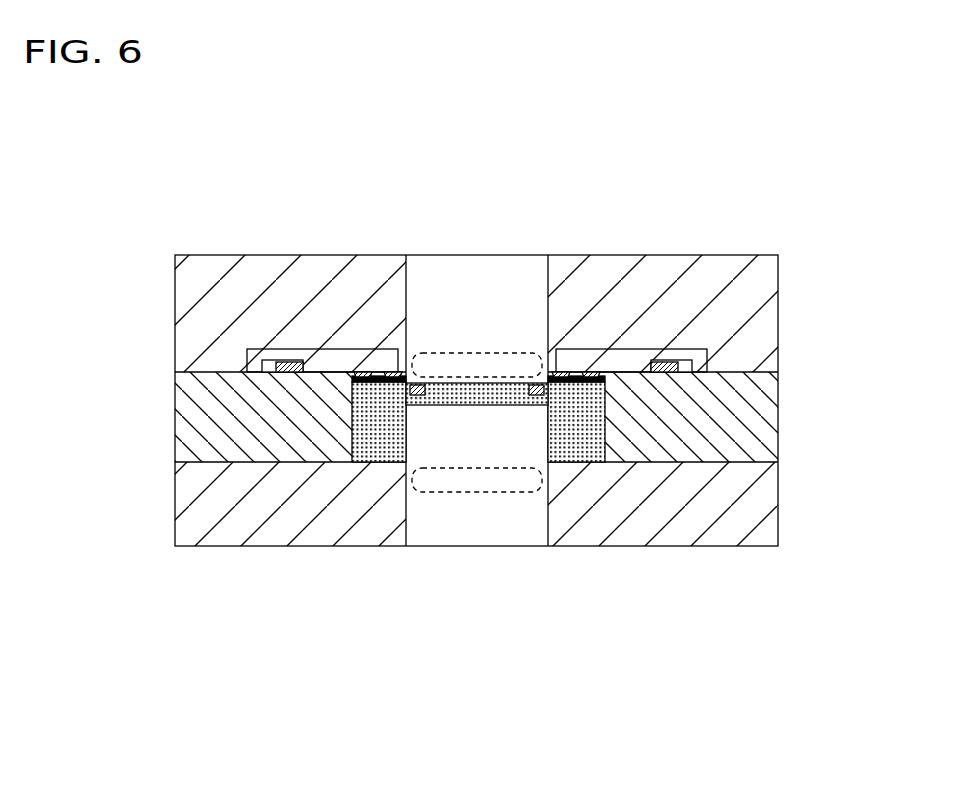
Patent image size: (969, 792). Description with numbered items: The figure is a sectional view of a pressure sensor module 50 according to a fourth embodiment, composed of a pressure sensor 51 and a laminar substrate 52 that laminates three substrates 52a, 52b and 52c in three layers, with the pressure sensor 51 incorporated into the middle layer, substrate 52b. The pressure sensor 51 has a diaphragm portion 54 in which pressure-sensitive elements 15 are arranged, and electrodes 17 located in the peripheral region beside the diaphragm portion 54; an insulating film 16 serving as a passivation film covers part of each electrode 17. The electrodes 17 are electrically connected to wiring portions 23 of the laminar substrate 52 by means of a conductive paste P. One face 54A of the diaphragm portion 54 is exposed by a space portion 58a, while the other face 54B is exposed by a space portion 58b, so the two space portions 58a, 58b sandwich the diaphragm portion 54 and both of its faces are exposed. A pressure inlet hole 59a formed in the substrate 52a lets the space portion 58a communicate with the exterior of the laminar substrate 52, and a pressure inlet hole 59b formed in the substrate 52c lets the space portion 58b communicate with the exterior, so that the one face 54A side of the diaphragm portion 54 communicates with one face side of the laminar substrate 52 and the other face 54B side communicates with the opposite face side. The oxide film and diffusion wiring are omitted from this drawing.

The pressure-sensitive element 15 is at (460, 528).
The insulating film 16 is at (352, 378).
The electrode 17 is at (378, 379).
The wiring portion 23 is at (280, 364).
The pressure sensor module 50 is at (787, 214).
The pressure sensor 51 is at (480, 547).
The laminar substrate 52 is at (543, 400).
The substrate 52a is at (766, 323).
The substrate 52b is at (766, 425).
The substrate 52c is at (517, 504).
The diaphragm portion 54 is at (477, 393).
The one face of diaphragm portion 54A is at (462, 383).
The other face of diaphragm portion 54B is at (510, 400).
The space portion 58a is at (478, 376).
The other face side space portion 58b is at (450, 482).
The pressure inlet hole 59a is at (548, 282).
The pressure inlet hole 59b is at (540, 433).
The conductive paste P is at (327, 360).